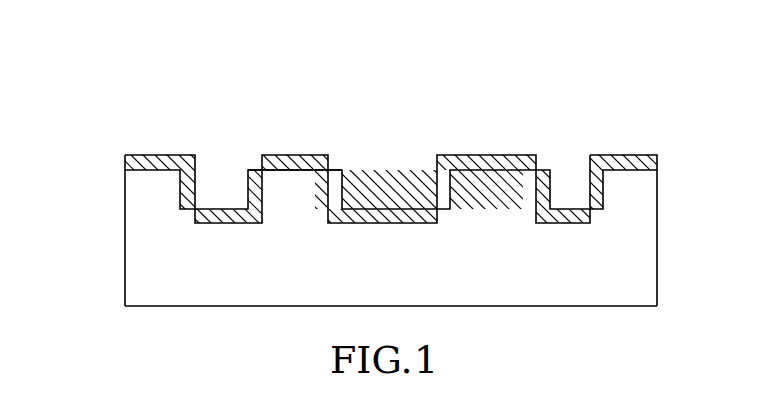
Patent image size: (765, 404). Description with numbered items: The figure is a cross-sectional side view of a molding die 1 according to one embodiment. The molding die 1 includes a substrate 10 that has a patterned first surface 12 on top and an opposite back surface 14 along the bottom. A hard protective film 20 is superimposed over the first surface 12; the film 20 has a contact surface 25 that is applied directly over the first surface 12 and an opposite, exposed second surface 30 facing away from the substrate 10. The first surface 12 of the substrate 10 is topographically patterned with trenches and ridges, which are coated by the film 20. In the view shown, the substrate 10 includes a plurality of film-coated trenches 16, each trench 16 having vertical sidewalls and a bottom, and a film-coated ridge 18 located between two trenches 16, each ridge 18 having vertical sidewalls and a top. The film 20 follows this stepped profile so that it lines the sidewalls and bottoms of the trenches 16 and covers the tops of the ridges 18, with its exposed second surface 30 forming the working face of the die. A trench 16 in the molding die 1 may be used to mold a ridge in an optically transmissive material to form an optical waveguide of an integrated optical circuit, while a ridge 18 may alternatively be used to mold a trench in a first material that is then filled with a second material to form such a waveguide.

The molding die 1 is at (118, 65).
The substrate 10 is at (140, 275).
The first surface 12 is at (620, 173).
The back surface 14 is at (625, 307).
The trench 16 is at (223, 182).
The ridge 18 is at (488, 198).
The protective film 20 is at (144, 160).
The contact surface 25 is at (655, 162).
The second surface 30 is at (624, 157).